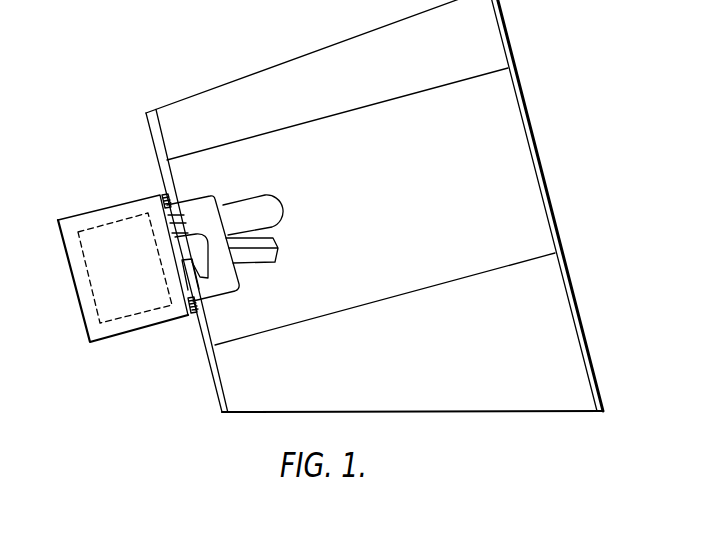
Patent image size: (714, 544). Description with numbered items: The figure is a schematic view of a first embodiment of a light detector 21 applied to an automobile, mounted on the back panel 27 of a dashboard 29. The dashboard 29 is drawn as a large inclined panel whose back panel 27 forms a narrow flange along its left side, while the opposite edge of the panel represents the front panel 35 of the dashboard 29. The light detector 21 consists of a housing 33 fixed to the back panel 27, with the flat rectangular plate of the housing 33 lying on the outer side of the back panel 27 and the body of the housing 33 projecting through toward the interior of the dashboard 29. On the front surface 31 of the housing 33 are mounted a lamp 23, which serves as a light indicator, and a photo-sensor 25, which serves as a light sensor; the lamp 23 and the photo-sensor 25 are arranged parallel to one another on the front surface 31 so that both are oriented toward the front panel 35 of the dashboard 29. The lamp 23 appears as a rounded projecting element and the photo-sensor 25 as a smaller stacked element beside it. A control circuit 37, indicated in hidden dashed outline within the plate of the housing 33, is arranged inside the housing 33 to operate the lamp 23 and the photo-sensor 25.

The light detector 21 is at (98, 204).
The lamp 23 is at (258, 196).
The photo-sensor 25 is at (280, 249).
The back panel 27 is at (157, 126).
The dashboard 29 is at (374, 206).
The front surface 31 is at (243, 276).
The housing 33 is at (146, 323).
The front panel 35 is at (540, 158).
The control circuit 37 is at (93, 302).